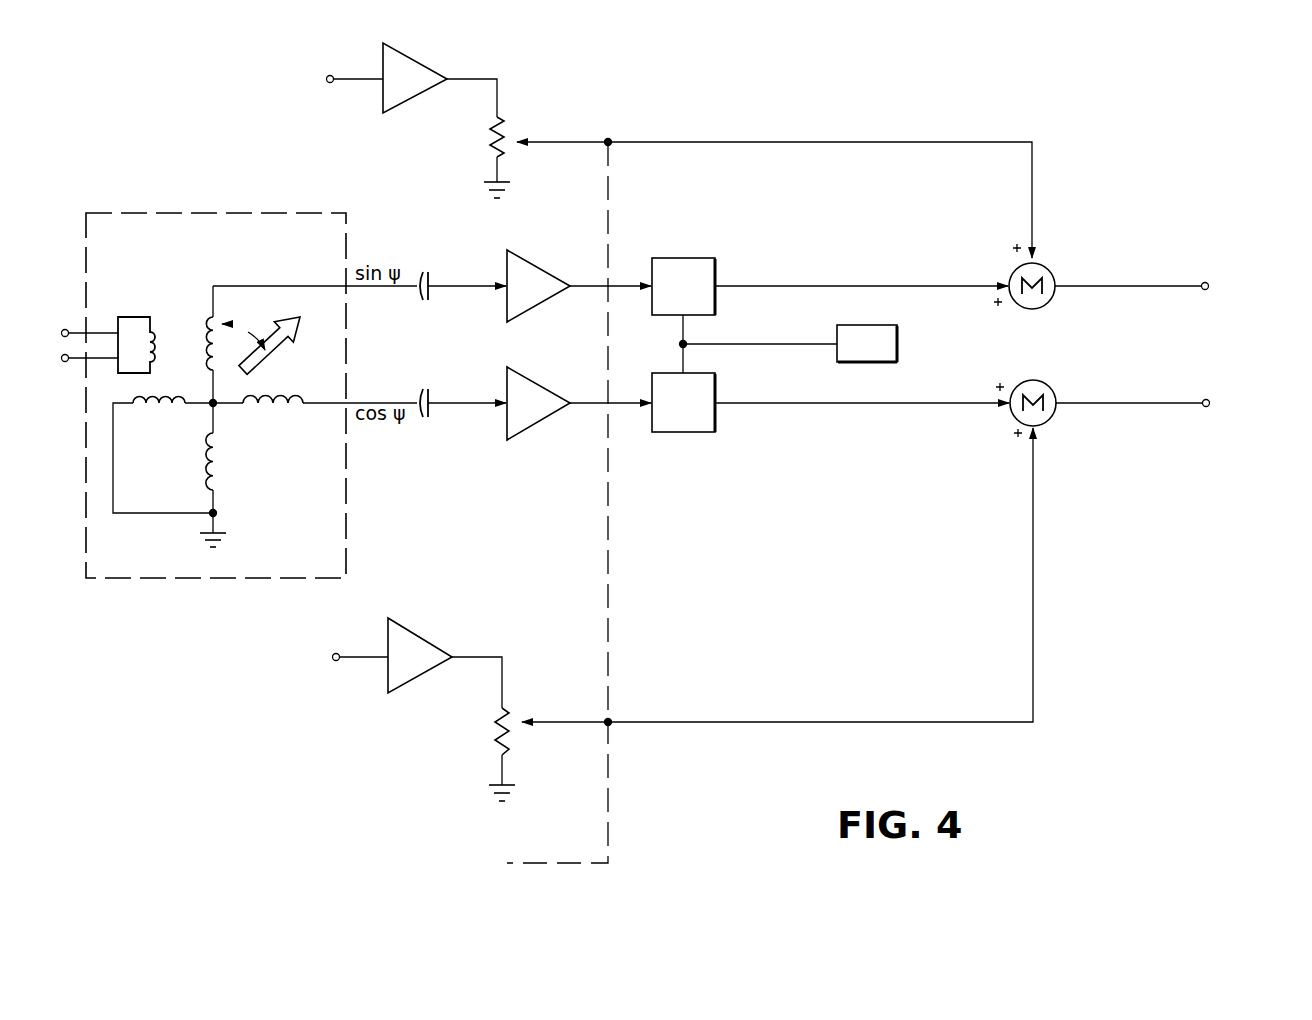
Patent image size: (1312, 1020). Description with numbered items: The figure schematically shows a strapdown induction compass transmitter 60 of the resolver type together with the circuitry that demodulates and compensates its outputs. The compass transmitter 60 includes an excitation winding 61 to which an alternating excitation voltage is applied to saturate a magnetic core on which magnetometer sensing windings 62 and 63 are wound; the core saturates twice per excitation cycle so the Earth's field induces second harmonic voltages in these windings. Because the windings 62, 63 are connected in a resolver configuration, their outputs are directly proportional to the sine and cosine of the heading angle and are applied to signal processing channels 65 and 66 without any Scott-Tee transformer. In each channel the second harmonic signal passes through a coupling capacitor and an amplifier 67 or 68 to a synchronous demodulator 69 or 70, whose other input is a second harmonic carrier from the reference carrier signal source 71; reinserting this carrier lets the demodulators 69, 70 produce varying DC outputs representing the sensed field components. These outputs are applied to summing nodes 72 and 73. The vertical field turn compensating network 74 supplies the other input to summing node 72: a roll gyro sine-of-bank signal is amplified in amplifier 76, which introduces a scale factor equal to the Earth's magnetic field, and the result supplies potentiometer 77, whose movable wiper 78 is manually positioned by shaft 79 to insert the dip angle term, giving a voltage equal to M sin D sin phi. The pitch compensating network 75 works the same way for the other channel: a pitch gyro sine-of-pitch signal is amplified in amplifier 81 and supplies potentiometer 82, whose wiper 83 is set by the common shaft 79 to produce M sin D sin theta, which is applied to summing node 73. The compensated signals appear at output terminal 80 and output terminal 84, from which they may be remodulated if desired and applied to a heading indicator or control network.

The strapdown induction compass transmitter 60 is at (198, 585).
The excitation winding 61 is at (132, 355).
The magnetometer sensing winding 62 is at (204, 323).
The magnetometer sensing winding 63 is at (219, 463).
The signal processing channel 65 is at (866, 239).
The signal processing channel 66 is at (880, 462).
The amplifier 67 is at (537, 273).
The amplifier 68 is at (533, 428).
The synchronous demodulator 69 is at (680, 257).
The synchronous demodulator 70 is at (680, 433).
The reference carrier signal source 71 is at (857, 325).
The summing node 72 is at (1048, 264).
The summing node 73 is at (1049, 418).
The vertical field turn compensating network 74 is at (565, 116).
The pitch compensating network 75 is at (668, 780).
The amplifier 76 is at (417, 63).
The potentiometer 77 is at (485, 143).
The potentiometer wiper 78 is at (521, 148).
The shaft 79 is at (609, 183).
The output terminal 80 is at (1205, 282).
The amplifier 81 is at (422, 672).
The potentiometer 82 is at (491, 728).
The potentiometer wiper 83 is at (563, 723).
The output terminal 84 is at (1208, 399).